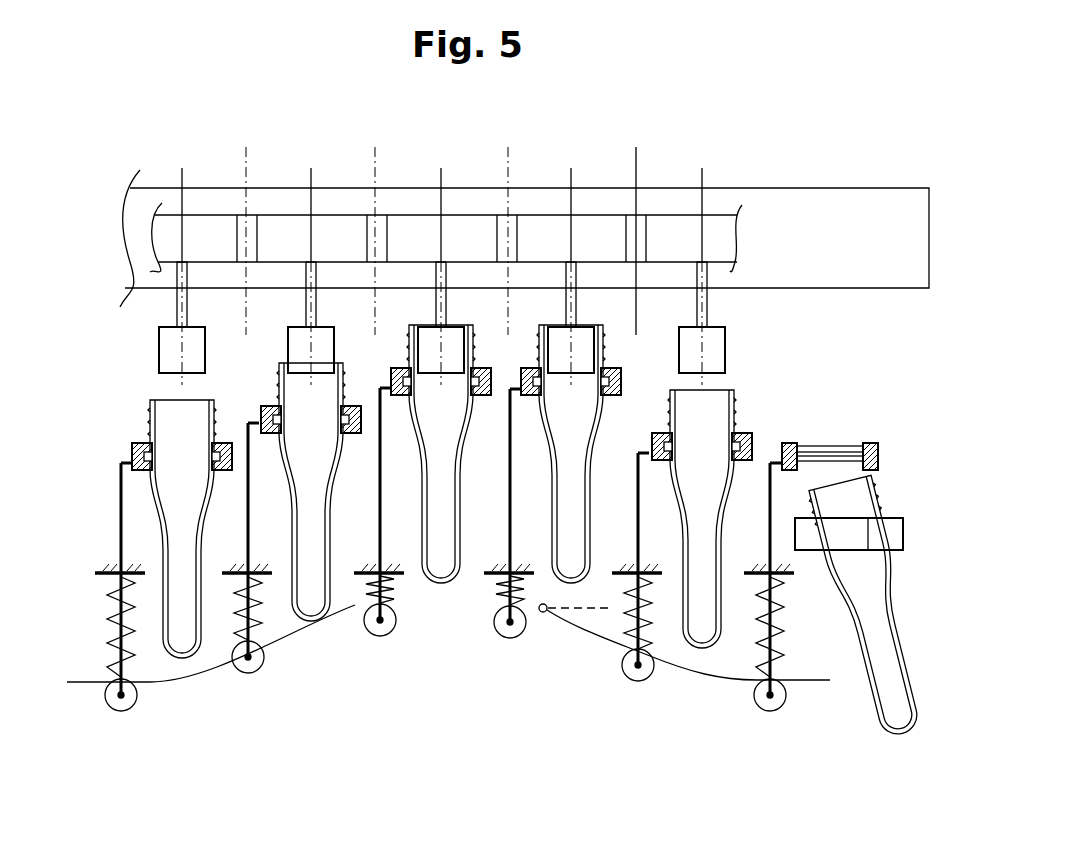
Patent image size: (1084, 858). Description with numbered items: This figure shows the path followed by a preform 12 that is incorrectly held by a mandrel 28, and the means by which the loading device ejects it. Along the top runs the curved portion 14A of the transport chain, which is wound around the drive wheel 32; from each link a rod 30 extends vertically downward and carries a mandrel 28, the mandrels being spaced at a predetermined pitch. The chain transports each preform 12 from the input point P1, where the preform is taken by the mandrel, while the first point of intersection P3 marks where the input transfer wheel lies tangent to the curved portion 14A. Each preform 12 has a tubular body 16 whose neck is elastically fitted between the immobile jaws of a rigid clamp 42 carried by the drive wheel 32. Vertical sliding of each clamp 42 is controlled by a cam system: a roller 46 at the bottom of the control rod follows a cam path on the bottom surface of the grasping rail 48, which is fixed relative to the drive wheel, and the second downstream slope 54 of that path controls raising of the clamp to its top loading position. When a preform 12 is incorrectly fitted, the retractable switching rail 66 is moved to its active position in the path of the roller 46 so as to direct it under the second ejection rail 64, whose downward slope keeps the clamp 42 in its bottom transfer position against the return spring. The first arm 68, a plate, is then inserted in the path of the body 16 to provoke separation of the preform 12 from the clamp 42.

The preform 12 is at (182, 628).
The curved portion of the transport chain 14A is at (600, 235).
The tubular body 16 is at (883, 655).
The mandrel 28 is at (168, 345).
The rod 30 is at (707, 308).
The drive wheel 32 is at (826, 222).
The clamp 42 is at (750, 437).
The roller 46 is at (121, 705).
The grasping rail 48 is at (78, 724).
The second downstream slope 54 is at (220, 660).
The second ejection rail 64 is at (710, 698).
The retractable switching rail 66 is at (585, 643).
The first arm 68 is at (895, 527).
The input point P1 is at (441, 168).
The first point of intersection P3 is at (182, 168).